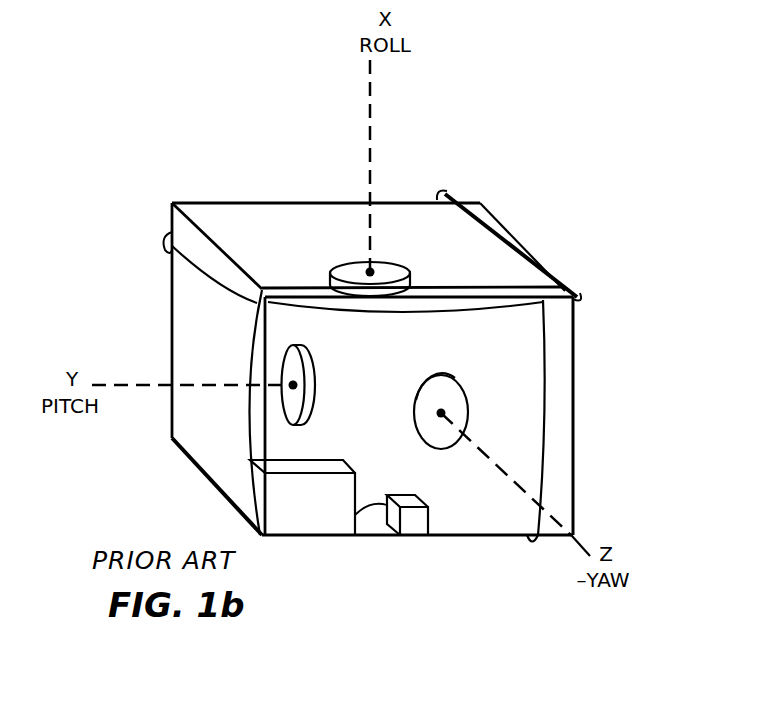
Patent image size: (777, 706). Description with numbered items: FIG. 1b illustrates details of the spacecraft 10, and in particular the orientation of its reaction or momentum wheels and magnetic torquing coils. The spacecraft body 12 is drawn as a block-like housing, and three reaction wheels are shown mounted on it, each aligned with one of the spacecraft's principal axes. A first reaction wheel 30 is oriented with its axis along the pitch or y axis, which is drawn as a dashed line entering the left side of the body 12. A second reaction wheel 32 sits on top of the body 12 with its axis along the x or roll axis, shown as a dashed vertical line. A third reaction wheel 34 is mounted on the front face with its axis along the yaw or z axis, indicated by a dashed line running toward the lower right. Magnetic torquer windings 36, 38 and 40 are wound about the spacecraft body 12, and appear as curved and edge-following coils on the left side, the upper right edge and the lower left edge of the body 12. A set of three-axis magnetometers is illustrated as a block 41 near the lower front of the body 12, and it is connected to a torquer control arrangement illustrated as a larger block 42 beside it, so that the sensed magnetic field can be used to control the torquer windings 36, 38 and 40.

The spacecraft 10 is at (596, 237).
The body 12 is at (238, 200).
The first reaction wheel 30 is at (322, 383).
The second reaction wheel 32 is at (355, 265).
The third reaction wheel 34 is at (467, 402).
The magnetic torquer winding 36 is at (232, 300).
The magnetic torquer winding 38 is at (498, 236).
The magnetic torquer winding 40 is at (243, 440).
The set of three-axis magnetometers 41 is at (414, 528).
The torquer control arrangement 42 is at (323, 493).